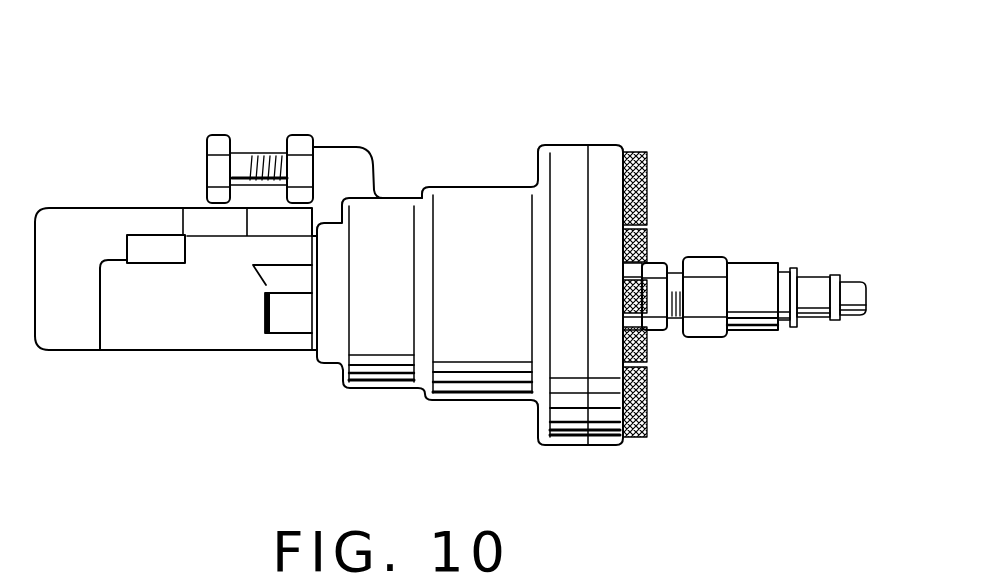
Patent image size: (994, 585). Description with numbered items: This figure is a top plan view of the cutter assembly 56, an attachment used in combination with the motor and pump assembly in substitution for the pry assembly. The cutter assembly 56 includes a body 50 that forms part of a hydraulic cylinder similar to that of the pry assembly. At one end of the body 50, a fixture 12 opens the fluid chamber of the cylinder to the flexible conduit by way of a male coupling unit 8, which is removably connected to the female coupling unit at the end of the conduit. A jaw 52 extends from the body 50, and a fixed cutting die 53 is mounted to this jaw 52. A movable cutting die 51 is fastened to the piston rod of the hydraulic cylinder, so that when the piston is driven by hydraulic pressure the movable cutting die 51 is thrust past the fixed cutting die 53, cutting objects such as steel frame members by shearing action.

The male coupling unit 8 is at (757, 282).
The fixture 12 is at (703, 330).
The body 50 is at (482, 205).
The movable cutting die 51 is at (255, 285).
The jaw 52 is at (132, 325).
The fixed cutting die 53 is at (157, 243).
The cutter assembly 56 is at (434, 112).